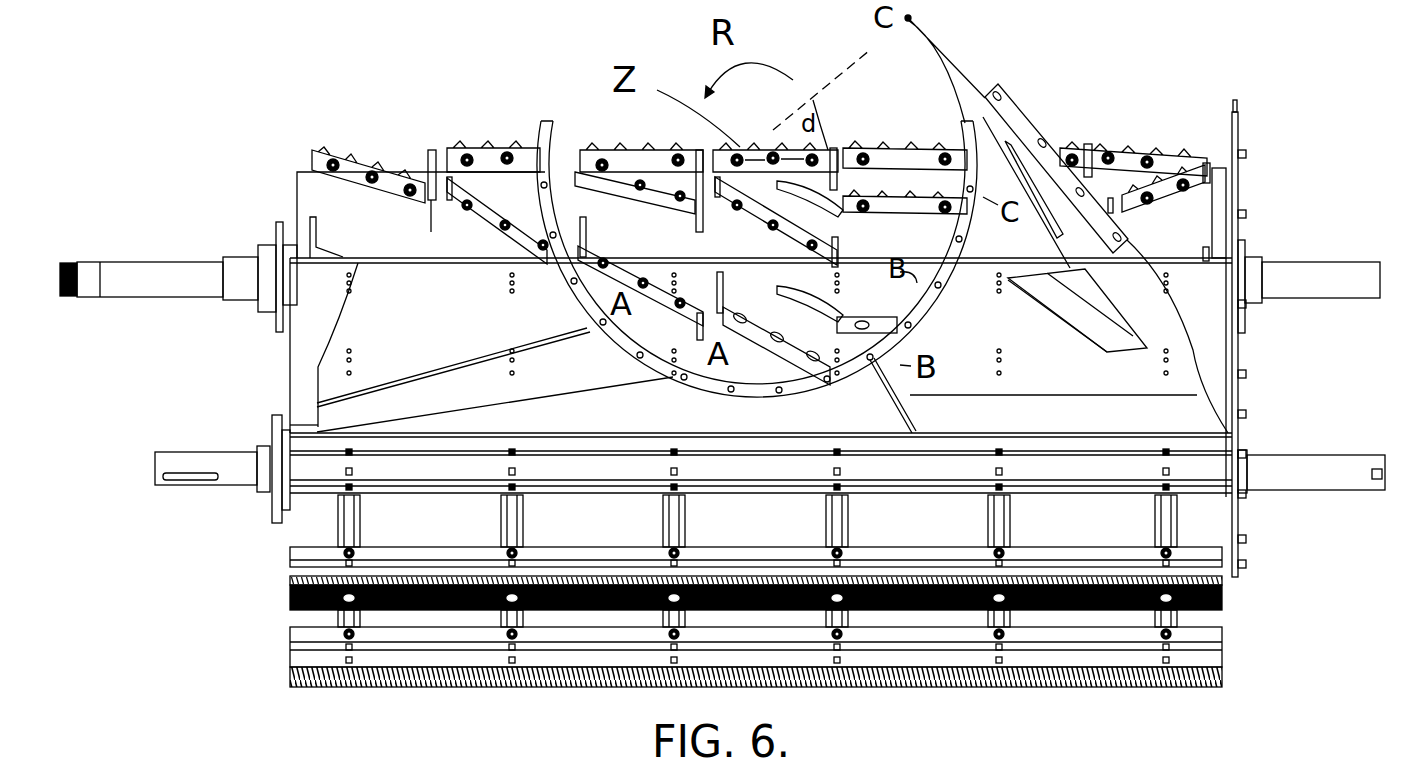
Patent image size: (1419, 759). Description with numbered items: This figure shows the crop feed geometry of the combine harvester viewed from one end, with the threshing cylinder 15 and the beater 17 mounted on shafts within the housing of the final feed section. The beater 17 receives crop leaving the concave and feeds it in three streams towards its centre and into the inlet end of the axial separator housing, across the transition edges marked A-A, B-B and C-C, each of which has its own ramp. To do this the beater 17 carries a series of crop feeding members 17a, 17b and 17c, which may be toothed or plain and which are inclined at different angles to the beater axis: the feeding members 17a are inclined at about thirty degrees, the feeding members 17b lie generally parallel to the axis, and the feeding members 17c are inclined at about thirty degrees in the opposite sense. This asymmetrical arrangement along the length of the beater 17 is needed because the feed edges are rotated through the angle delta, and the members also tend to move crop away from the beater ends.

The threshing cylinder 15 is at (313, 555).
The beater 17 is at (327, 205).
The crop feeding members 17a is at (1172, 187).
The crop feeding members 17b is at (897, 198).
The crop feeding members 17c is at (603, 157).